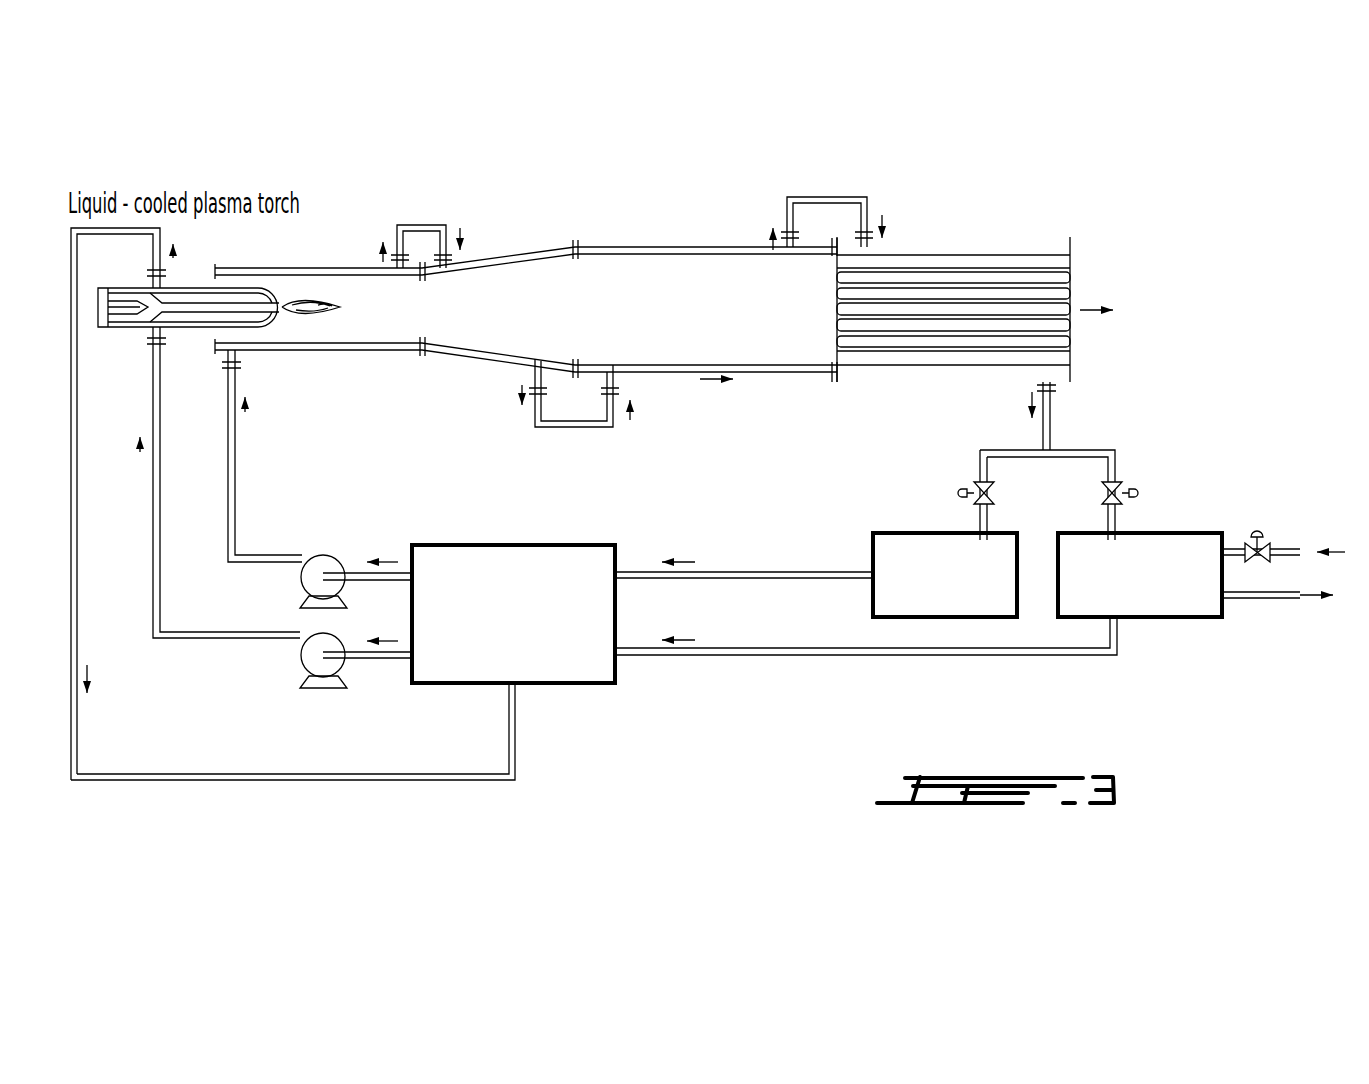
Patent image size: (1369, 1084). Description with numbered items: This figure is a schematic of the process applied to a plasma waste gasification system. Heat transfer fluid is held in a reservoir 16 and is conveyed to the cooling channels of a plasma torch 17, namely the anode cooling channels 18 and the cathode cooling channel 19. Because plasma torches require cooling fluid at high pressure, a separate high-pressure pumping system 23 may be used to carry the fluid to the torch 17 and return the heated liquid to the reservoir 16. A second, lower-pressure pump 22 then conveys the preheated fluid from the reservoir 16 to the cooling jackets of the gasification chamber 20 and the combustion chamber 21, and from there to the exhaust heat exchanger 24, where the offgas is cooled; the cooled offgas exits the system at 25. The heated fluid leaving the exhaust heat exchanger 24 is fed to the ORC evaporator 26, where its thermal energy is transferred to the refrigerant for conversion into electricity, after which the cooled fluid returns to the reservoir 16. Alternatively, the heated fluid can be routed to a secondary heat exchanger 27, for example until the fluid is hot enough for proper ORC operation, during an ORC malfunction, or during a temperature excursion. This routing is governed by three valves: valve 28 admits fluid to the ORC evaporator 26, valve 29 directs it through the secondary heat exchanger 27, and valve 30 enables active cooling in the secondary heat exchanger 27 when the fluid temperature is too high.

The reservoir 16 is at (567, 665).
The plasma torch 17 is at (293, 485).
The anode cooling channels 18 is at (195, 320).
The cathode cooling channel 19 is at (122, 312).
The gasification chamber 20 is at (364, 343).
The combustion chamber 21 is at (782, 324).
The pump 22 is at (302, 577).
The high-pressure pumping system 23 is at (302, 656).
The exhaust heat exchanger 24 is at (1022, 367).
The offgas exit 25 is at (1099, 306).
The ORC evaporator 26 is at (882, 551).
The secondary heat exchanger 27 is at (1163, 618).
The valve 28 is at (980, 487).
The valve 29 is at (1116, 488).
The valve 30 is at (1264, 545).